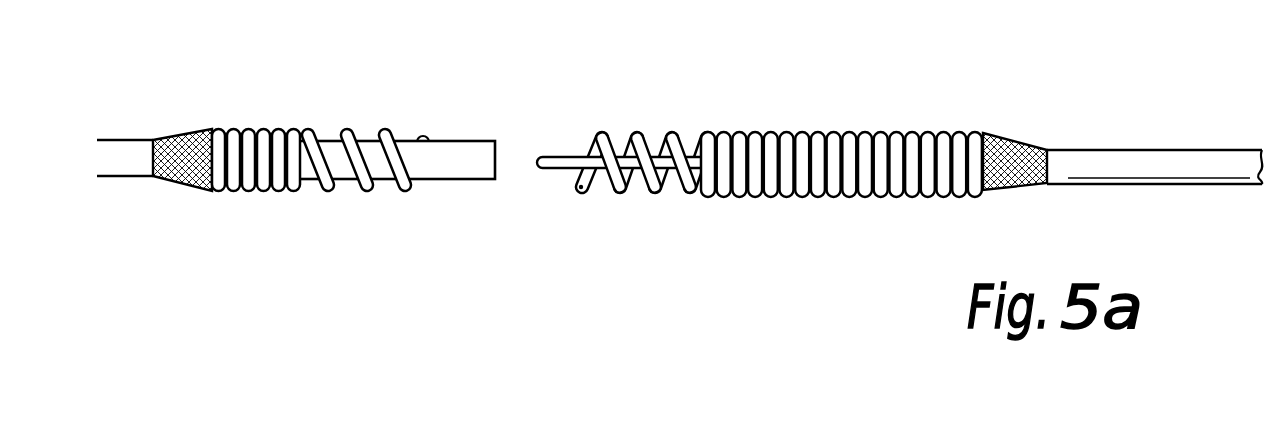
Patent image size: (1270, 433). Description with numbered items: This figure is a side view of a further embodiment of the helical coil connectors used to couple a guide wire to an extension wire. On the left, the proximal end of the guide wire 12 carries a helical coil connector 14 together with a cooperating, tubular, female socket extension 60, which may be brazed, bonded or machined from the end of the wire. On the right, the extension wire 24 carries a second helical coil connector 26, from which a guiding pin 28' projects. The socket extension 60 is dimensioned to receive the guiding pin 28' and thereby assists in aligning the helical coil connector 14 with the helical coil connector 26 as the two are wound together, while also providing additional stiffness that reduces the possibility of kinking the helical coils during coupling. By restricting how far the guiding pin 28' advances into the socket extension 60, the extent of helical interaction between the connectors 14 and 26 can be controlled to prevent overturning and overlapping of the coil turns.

The guide wire 12 is at (128, 140).
The helical coil connector 14 is at (388, 132).
The socket extension 60 is at (475, 155).
The helical coil connector 26 is at (759, 177).
The guiding pin 28' is at (621, 219).
The extension wire 24 is at (1114, 131).